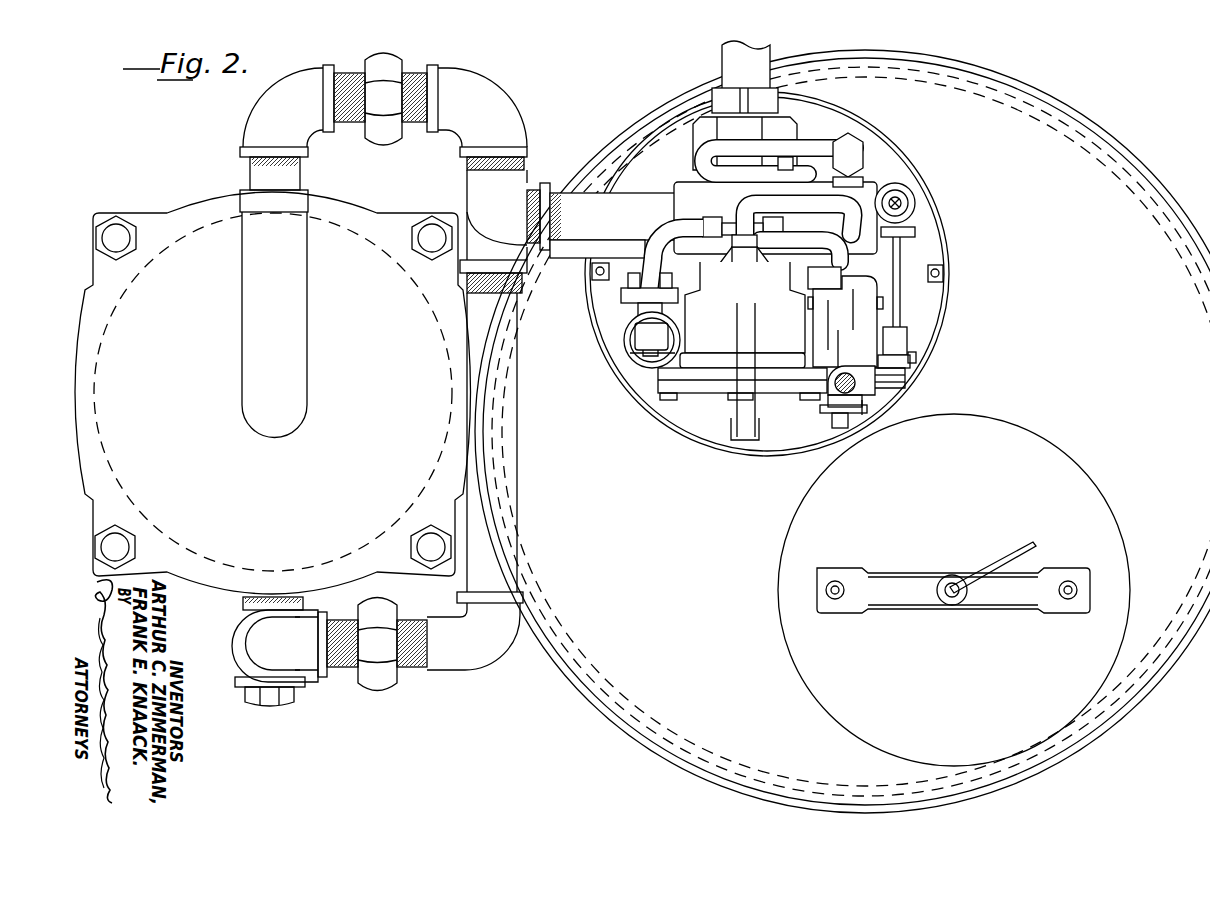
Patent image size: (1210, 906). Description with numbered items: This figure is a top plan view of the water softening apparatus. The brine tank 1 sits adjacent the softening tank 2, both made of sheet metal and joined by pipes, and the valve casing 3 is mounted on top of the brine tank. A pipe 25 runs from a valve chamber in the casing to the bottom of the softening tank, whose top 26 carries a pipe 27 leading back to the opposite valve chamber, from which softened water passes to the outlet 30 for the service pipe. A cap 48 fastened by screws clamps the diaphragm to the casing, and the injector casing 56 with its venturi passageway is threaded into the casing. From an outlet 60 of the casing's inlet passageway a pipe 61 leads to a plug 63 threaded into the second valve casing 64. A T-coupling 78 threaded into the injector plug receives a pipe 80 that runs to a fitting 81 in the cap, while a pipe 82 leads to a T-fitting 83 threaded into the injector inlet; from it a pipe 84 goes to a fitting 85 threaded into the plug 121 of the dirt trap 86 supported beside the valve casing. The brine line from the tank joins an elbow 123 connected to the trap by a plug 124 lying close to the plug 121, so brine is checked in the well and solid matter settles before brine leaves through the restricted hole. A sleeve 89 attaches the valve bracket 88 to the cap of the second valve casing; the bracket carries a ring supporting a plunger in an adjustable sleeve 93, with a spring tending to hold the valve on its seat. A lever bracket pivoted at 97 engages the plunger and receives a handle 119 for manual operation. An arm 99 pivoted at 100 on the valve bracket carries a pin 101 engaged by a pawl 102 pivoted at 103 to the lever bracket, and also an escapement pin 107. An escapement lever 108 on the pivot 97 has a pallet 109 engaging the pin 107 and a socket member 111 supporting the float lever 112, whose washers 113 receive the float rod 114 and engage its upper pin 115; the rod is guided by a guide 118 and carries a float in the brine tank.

The brine tank 1 is at (1153, 210).
The softening tank 2 is at (188, 228).
The valve casing 3 is at (903, 156).
The pipe 25 is at (507, 500).
The top 26 is at (343, 235).
The pipe 27 is at (535, 190).
The outlet 30 is at (730, 62).
The cap 48 is at (715, 400).
The injector casing 56 is at (720, 268).
The outlet 60 is at (786, 158).
The pipe 61 is at (706, 163).
The plug 63 is at (861, 177).
The second valve casing 64 is at (865, 210).
The T-coupling 78 is at (740, 277).
The pipe 80 is at (746, 440).
The fitting 81 is at (733, 433).
The pipe 82 is at (798, 232).
The T-fitting 83 is at (732, 217).
The pipe 84 is at (652, 240).
The fitting 85 is at (642, 338).
The dirt trap 86 is at (636, 350).
The valve bracket 88 is at (813, 283).
The sleeve 89 is at (853, 228).
The sleeve 93 is at (893, 402).
The pivot 97 is at (915, 355).
The arm 99 is at (867, 302).
The pivot 100 is at (885, 303).
The pin 101 is at (840, 340).
The pawl 102 is at (838, 418).
The pivot 103 is at (850, 430).
The escapement pin 107 is at (910, 368).
The escapement lever 108 is at (900, 388).
The pallet 109 is at (907, 378).
The socket member 111 is at (900, 333).
The float lever 112 is at (898, 258).
The washers 113 is at (918, 192).
The float rod 114 is at (918, 213).
The upper pin 115 is at (918, 201).
The guide 118 is at (912, 186).
The handle 119 is at (841, 394).
The plug 121 is at (640, 362).
The elbow 123 is at (592, 268).
The plug 124 is at (627, 280).